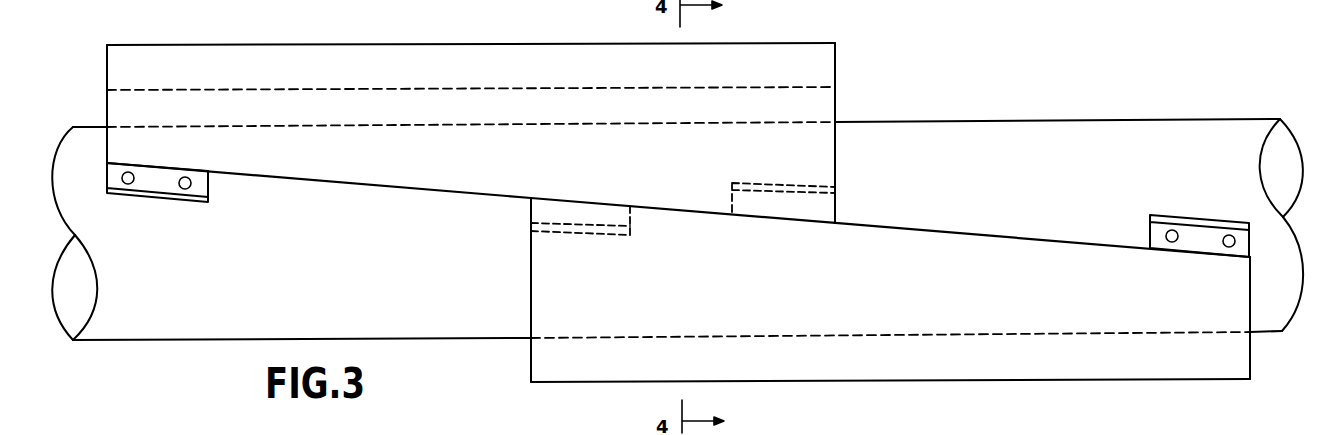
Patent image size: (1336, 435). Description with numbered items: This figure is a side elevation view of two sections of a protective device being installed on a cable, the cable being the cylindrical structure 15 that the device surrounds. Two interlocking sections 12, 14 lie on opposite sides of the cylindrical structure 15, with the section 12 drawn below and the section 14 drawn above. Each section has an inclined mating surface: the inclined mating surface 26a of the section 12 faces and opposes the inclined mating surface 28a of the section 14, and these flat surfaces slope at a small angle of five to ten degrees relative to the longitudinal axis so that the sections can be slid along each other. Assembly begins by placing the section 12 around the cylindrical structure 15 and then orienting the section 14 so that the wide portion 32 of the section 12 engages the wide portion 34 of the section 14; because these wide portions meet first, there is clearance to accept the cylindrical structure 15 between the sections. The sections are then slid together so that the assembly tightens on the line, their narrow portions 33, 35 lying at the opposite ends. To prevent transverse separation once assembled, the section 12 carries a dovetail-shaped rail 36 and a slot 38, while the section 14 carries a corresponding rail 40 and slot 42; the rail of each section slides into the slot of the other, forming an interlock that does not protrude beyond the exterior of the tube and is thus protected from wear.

The section 12 is at (958, 362).
The section 14 is at (361, 62).
The cylindrical structure 15 is at (1085, 119).
The inclined mating surface 26a is at (978, 230).
The inclined mating surface 28a is at (333, 185).
The wide portion 32 is at (532, 295).
The narrow portion 33 is at (1250, 352).
The wide portion 34 is at (835, 97).
The narrow portion 35 is at (105, 117).
The dovetail-shaped rail 36 is at (1198, 215).
The slot 38 is at (633, 222).
The rail 40 is at (227, 195).
The slot 42 is at (835, 205).